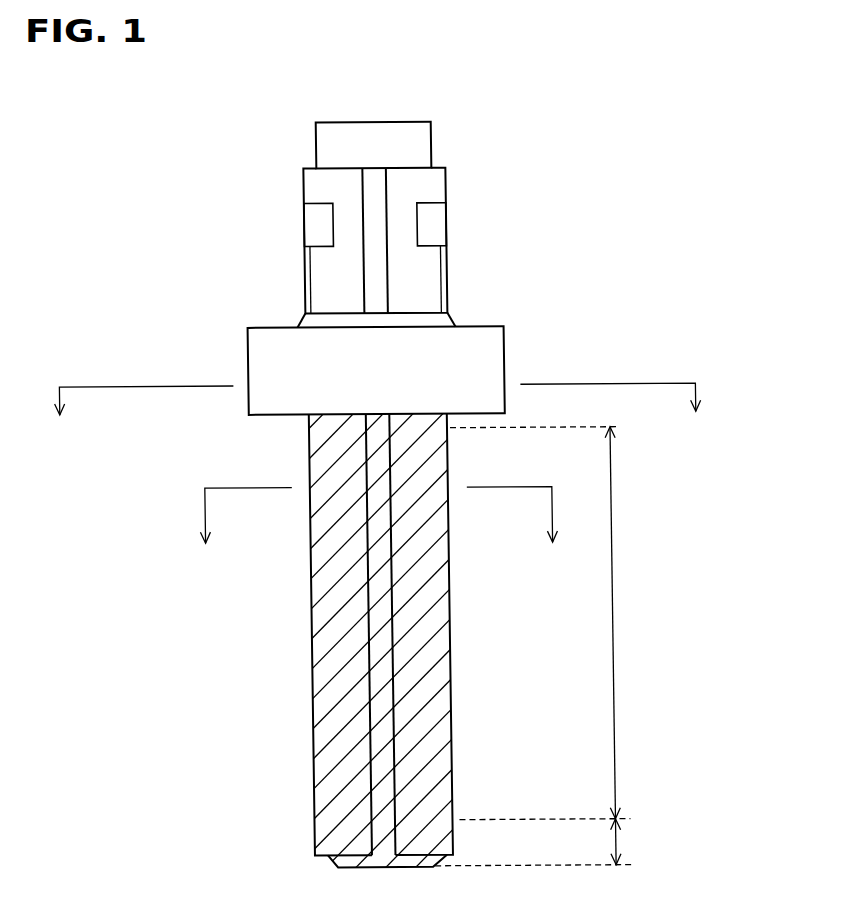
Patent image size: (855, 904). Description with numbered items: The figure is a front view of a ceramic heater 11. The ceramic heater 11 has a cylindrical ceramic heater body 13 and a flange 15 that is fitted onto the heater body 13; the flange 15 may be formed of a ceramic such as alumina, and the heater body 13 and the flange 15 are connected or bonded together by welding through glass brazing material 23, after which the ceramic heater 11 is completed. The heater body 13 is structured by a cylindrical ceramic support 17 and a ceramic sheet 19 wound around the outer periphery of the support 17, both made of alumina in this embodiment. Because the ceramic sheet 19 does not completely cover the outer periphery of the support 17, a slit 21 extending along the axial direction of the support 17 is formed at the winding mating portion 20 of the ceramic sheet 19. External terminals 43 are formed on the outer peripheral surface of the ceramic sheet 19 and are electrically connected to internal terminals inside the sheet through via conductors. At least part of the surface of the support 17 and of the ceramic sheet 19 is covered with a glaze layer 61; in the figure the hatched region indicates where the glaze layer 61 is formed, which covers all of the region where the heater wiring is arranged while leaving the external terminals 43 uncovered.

The ceramic heater 11 is at (506, 90).
The ceramic heater body 13 is at (565, 147).
The flange 15 is at (274, 354).
The ceramic support 17 is at (418, 145).
The ceramic sheet 19 is at (418, 268).
The winding mating portion 20 is at (379, 807).
The slit 21 is at (391, 684).
The glass brazing material 23 is at (416, 313).
The external terminals 43 is at (431, 208).
The glaze layer 61 is at (333, 630).